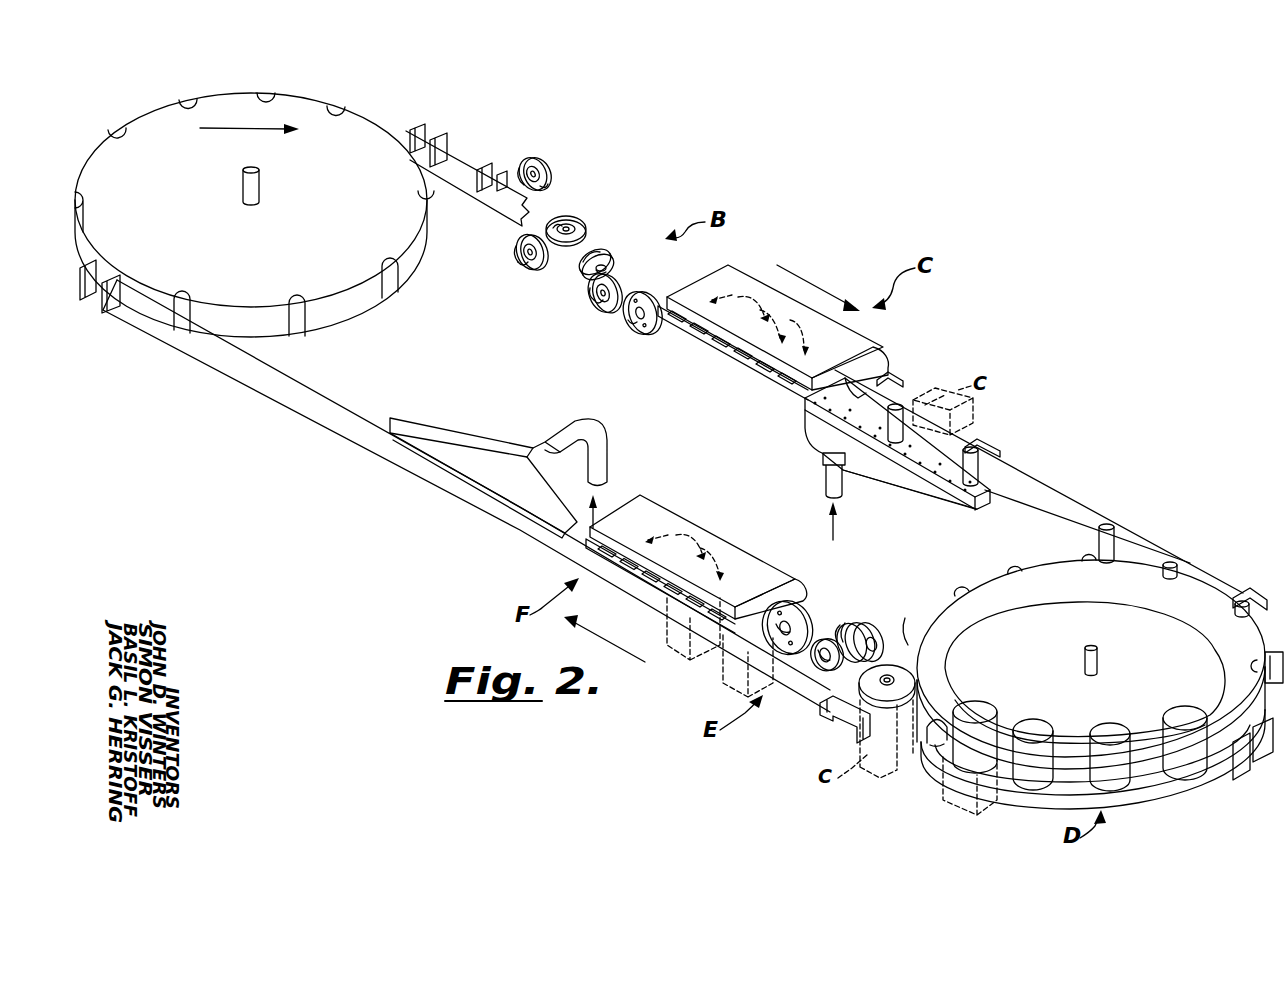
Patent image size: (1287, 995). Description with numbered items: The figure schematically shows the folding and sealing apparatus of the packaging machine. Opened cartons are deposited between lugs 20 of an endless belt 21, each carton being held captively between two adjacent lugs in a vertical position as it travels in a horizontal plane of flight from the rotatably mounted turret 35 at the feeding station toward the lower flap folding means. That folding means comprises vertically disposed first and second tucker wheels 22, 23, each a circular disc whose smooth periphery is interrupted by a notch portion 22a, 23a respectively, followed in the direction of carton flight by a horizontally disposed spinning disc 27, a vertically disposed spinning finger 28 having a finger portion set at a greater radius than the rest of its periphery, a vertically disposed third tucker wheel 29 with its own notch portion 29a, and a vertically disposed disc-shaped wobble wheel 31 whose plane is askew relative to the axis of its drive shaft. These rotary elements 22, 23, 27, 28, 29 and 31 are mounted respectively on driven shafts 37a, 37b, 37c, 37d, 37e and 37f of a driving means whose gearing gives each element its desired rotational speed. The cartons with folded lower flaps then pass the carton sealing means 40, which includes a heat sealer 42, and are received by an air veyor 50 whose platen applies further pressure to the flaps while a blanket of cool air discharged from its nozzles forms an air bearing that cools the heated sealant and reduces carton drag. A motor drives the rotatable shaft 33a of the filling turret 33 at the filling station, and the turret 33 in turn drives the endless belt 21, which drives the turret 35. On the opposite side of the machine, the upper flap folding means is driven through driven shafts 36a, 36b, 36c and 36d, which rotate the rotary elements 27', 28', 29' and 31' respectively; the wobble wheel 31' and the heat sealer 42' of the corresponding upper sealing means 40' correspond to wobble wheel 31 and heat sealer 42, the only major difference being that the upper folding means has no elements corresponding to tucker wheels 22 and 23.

The lugs 20 is at (476, 168).
The endless belt 21 is at (514, 210).
The first tucker wheel 22 is at (548, 167).
The notch portion 22a is at (531, 153).
The second tucker wheel 23 is at (530, 272).
The notch portion 23a is at (517, 248).
The spinning disc 27 is at (592, 229).
The spinning finger 28 is at (619, 259).
The third tucker wheel 29 is at (600, 305).
The notch portion 29a is at (593, 290).
The wobble wheel 31 is at (650, 304).
The filling turret 33 is at (1176, 683).
The rotatable shaft 33a is at (1082, 663).
The turret 35 is at (262, 243).
The driven shaft 36a is at (920, 673).
The driven shaft 36b is at (964, 633).
The driven shaft 36c is at (823, 657).
The driven shaft 36d is at (783, 632).
The driven shaft 37a is at (601, 198).
The driven shaft 37b is at (518, 263).
The driven shaft 37c is at (580, 225).
The driven shaft 37d is at (648, 281).
The driven shaft 37e is at (597, 298).
The driven shaft 37f is at (630, 323).
The carton sealing means 40 is at (773, 332).
The housing block 40' is at (696, 596).
The heat sealer 42 is at (758, 309).
The heat sealer 42' is at (680, 547).
The air veyor 50 is at (464, 416).
The rotary element 27' is at (915, 709).
The rotary element 28' is at (880, 639).
The rotary element 29' is at (840, 631).
The wobble wheel 31' is at (804, 612).